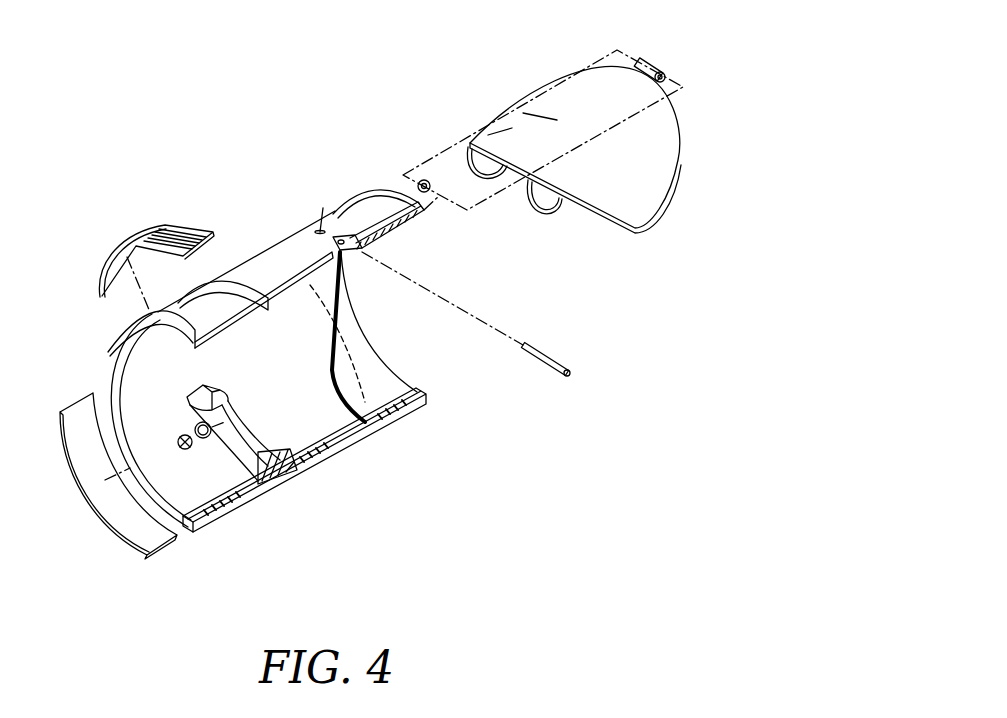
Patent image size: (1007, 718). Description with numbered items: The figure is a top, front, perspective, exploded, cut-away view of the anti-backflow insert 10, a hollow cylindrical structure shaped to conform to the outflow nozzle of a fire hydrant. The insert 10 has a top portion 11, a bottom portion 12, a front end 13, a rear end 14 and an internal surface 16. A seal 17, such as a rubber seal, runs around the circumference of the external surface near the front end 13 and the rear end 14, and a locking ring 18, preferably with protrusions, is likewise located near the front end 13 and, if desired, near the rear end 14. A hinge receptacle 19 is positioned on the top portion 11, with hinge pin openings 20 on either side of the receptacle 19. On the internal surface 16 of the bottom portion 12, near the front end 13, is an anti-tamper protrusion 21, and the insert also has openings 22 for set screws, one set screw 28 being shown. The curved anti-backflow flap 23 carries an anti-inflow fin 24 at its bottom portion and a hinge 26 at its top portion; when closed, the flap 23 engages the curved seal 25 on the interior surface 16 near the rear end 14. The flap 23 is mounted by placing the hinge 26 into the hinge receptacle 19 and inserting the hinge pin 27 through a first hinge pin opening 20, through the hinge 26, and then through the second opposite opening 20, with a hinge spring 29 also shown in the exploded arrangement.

The anti-backflow insert 10 is at (281, 176).
The top portion 11 is at (259, 262).
The bottom portion 12 is at (352, 441).
The front end 13 is at (188, 533).
The rear end 14 is at (422, 396).
The internal surface 16 is at (120, 375).
The seal 17 is at (152, 320).
The locking ring 18 is at (118, 254).
The hinge receptacle 19 is at (347, 235).
The hinge pin openings 20 is at (319, 208).
The anti-tamper protrusion 21 is at (252, 432).
The openings for set screws 22 is at (182, 436).
The anti-backflow flap 23 is at (663, 173).
The anti-inflow fin 24 is at (547, 212).
The curved seal 25 is at (370, 413).
The hinge 26 is at (645, 60).
The hinge pin 27 is at (550, 358).
The set screw 28 is at (200, 439).
The hinge spring 29 is at (423, 180).